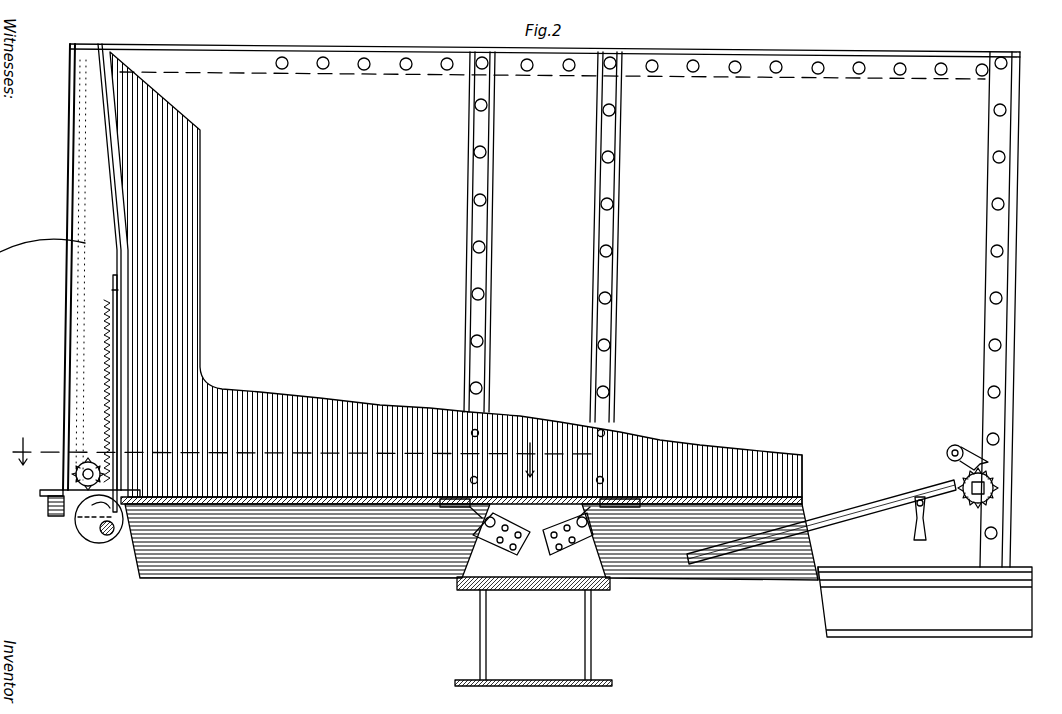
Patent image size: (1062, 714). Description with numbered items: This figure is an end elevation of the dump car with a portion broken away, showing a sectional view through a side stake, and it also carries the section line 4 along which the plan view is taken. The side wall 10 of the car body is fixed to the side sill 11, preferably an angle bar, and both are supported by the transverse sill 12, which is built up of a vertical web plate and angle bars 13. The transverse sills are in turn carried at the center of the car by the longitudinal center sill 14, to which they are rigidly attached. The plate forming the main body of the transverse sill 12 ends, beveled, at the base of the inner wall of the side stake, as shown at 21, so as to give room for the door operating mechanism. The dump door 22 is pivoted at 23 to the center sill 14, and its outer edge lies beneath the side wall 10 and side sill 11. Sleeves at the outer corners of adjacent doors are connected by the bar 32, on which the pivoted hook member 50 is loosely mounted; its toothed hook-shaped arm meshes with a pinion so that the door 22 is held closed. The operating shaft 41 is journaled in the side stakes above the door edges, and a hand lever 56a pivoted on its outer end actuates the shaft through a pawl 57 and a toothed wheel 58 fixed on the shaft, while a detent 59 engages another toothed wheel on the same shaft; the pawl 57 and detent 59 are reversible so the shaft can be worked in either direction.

The section line 4— 4 is at (306, 454).
The side wall 10 is at (65, 304).
The side sill 11 is at (42, 492).
The transverse sill 12 is at (157, 558).
The angle bar 13 is at (52, 512).
The longitudinal center sill 14 is at (580, 607).
The beveled end of transverse sill plate 21 is at (127, 482).
The dump door 22 is at (300, 504).
The door pivot 23 is at (473, 523).
The bar 32 is at (105, 536).
The operating shaft 41 is at (990, 482).
The pivoted hook member 50 is at (87, 538).
The hand lever 56a is at (852, 512).
The pawl 57 is at (926, 522).
The toothed wheel 58 is at (1000, 490).
The detent 59 is at (963, 452).